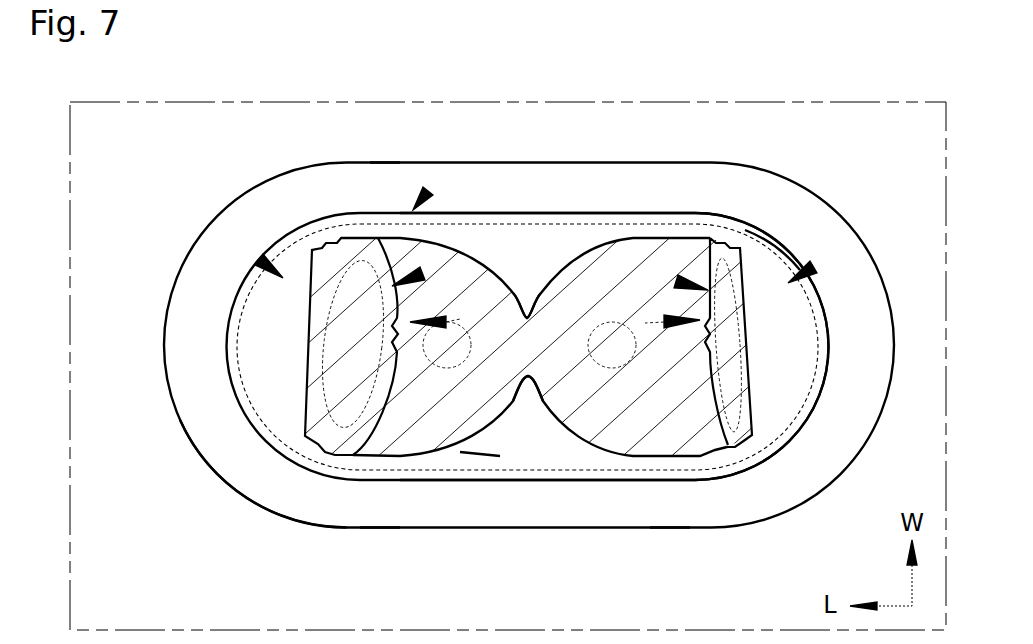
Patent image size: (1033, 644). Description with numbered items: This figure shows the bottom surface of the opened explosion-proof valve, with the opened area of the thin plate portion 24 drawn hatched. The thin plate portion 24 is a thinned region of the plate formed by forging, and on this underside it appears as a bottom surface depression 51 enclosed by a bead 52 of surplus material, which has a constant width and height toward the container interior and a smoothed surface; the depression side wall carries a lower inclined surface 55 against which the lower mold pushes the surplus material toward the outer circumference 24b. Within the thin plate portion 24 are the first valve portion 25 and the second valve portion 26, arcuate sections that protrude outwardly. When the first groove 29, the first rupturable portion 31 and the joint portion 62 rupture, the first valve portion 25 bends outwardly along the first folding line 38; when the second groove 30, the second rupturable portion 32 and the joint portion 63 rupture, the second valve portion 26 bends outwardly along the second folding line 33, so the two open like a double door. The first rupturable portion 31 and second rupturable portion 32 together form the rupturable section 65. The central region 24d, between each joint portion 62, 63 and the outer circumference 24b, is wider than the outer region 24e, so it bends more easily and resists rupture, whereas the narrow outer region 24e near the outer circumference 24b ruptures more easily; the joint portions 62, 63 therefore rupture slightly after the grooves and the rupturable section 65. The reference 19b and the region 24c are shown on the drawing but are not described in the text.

The drive unit 19b is at (762, 141).
The thin plate portion 24 is at (808, 409).
The outer circumference 24b is at (770, 255).
The casing bottom wall portion 24c is at (498, 456).
The central region 24d is at (530, 287).
The outer region 24e is at (392, 232).
The first valve portion 25 is at (423, 273).
The second valve portion 26 is at (676, 282).
The first groove 29 is at (478, 232).
The second groove 30 is at (657, 236).
The first rupturable portion 31 is at (259, 260).
The second rupturable portion 32 is at (813, 267).
The second folding line 33 is at (752, 372).
The first folding line 38 is at (308, 345).
The bottom surface depression 51 is at (428, 190).
The bead 52 is at (220, 455).
The lower inclined surface 55 is at (828, 340).
The joint portion 62 is at (398, 345).
The joint portion 63 is at (705, 350).
The rupturable section 65 is at (326, 245).